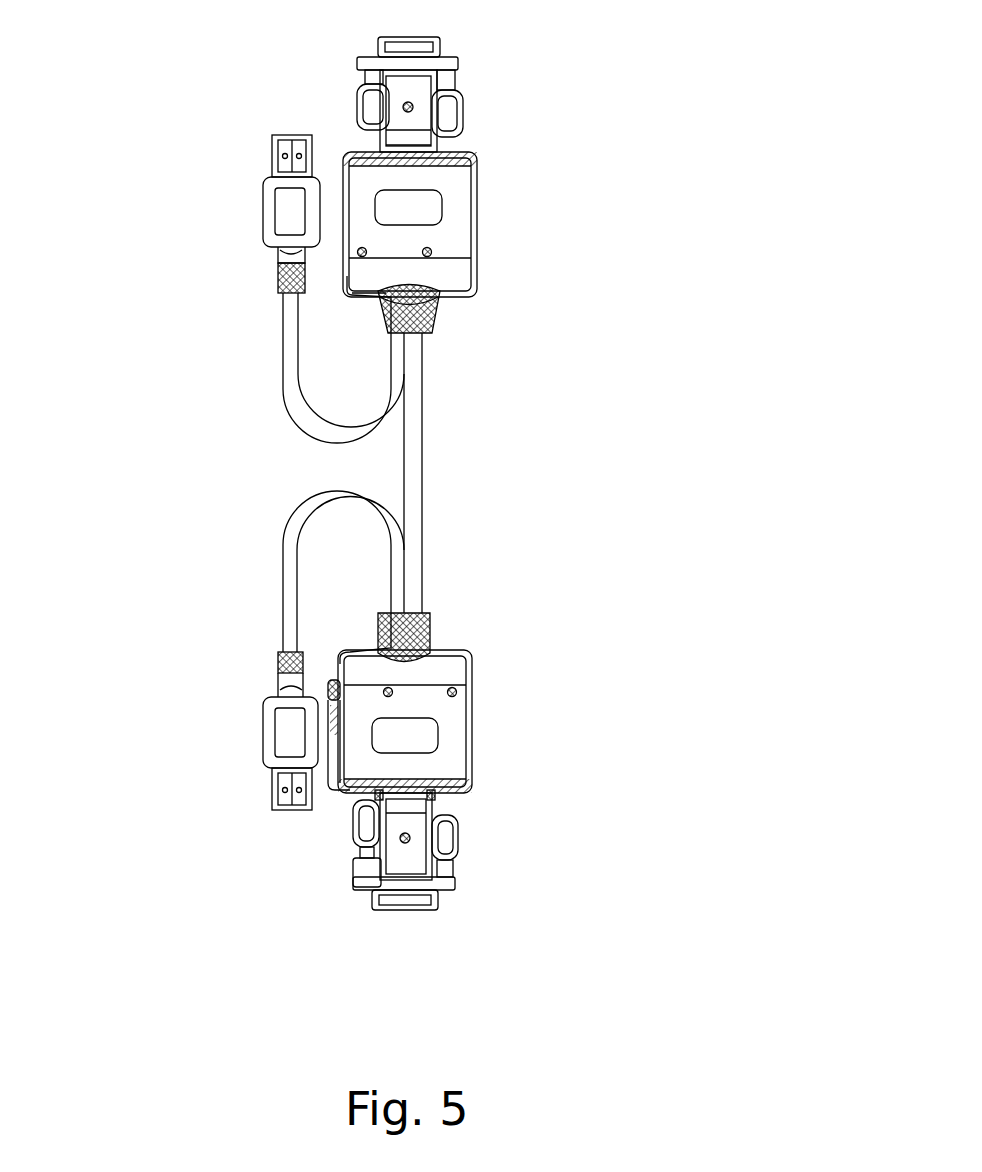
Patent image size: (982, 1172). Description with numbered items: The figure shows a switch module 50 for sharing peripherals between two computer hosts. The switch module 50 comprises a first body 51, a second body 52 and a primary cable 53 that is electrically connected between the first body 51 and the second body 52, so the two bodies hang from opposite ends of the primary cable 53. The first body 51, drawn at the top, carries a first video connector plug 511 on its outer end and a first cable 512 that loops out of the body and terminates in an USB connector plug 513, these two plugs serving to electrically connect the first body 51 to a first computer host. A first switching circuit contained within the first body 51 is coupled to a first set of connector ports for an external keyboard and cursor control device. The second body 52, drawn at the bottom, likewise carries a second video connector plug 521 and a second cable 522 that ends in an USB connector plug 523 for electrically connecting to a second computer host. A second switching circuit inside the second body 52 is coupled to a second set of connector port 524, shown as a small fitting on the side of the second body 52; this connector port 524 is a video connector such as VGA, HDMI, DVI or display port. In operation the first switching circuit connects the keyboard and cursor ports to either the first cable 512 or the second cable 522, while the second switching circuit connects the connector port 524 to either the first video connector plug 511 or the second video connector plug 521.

The switch module 50 is at (216, 862).
The first body 51 is at (440, 222).
The first video connector plug 511 is at (428, 78).
The first cable 512 is at (282, 361).
The USB connector plug 513 is at (275, 212).
The second body 52 is at (442, 728).
The second video connector plug 521 is at (427, 873).
The second cable 522 is at (283, 573).
The USB connector plug 523 is at (283, 738).
The second set of connector port 524 is at (335, 742).
The primary cable 53 is at (413, 477).